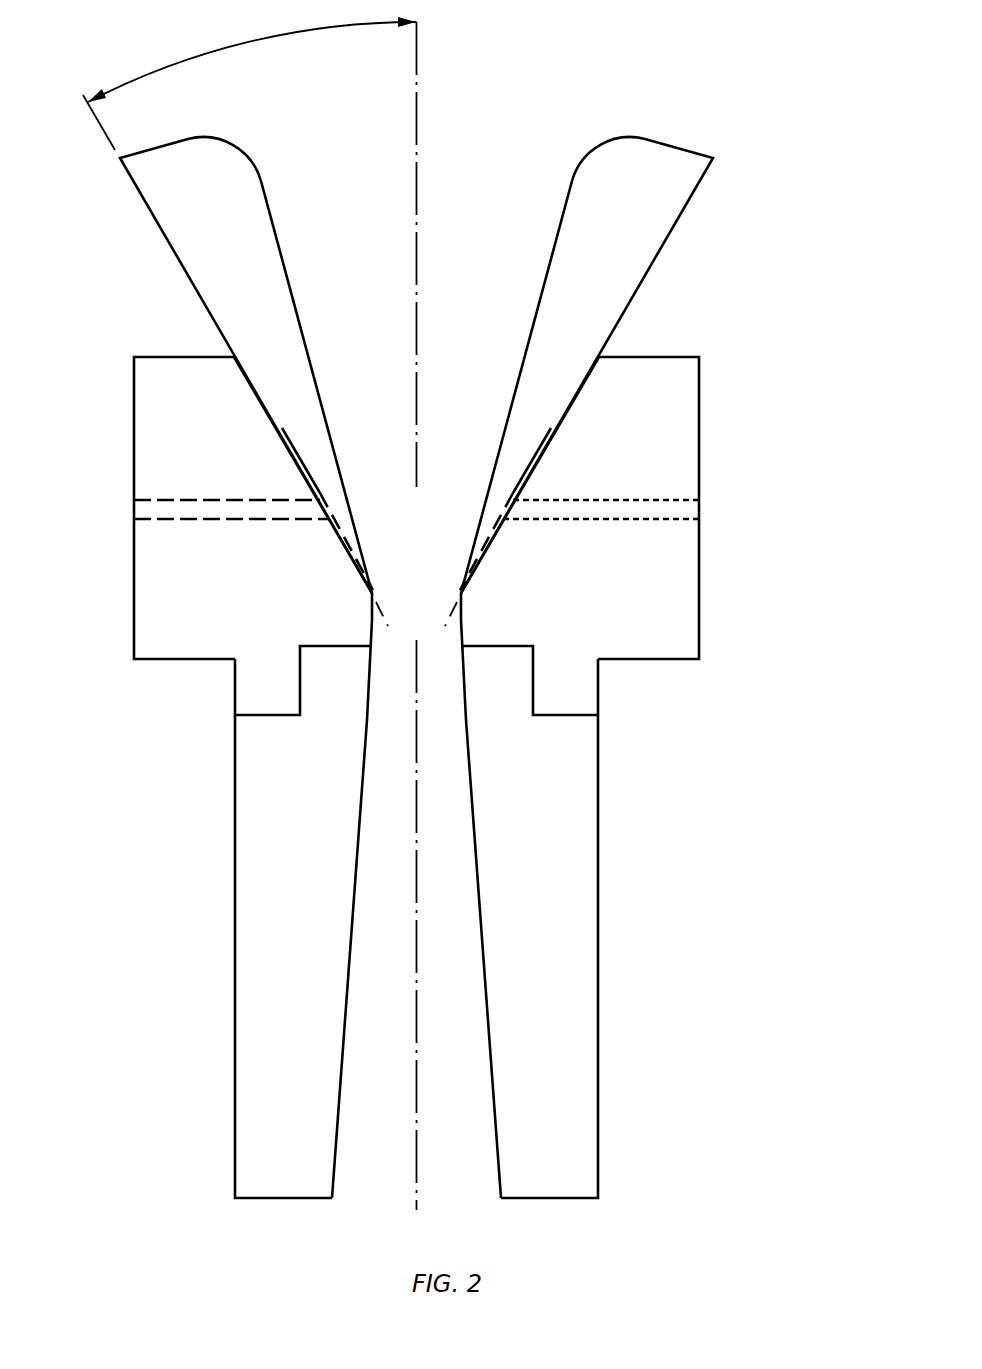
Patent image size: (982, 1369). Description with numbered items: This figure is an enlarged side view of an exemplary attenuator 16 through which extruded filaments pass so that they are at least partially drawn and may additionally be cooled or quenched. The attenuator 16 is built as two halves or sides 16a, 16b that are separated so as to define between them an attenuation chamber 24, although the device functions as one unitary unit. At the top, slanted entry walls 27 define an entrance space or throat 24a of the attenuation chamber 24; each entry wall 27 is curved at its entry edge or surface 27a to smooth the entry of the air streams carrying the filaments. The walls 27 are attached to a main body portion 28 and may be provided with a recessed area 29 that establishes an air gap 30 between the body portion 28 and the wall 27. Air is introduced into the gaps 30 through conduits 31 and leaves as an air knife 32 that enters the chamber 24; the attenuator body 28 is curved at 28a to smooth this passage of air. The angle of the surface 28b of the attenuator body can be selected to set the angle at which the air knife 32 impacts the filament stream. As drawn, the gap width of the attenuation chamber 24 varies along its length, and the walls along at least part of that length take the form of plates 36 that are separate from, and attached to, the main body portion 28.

The attenuator 16 is at (730, 71).
The attenuator half or side 16a is at (653, 332).
The attenuator half or side 16b is at (197, 332).
The attenuation chamber 24 is at (456, 779).
The entrance space or throat 24a is at (503, 303).
The slanted entry wall 27 is at (152, 200).
The entry edge or surface 27a is at (231, 147).
The main body portion 28 is at (145, 390).
The curved portion of attenuator body 28a is at (463, 603).
The surface of attenuator body 28b is at (263, 393).
The recessed area 29 is at (338, 538).
The air gap 30 is at (326, 413).
The conduit 31 is at (670, 498).
The air knife 32 is at (443, 628).
The plate 36 is at (585, 965).